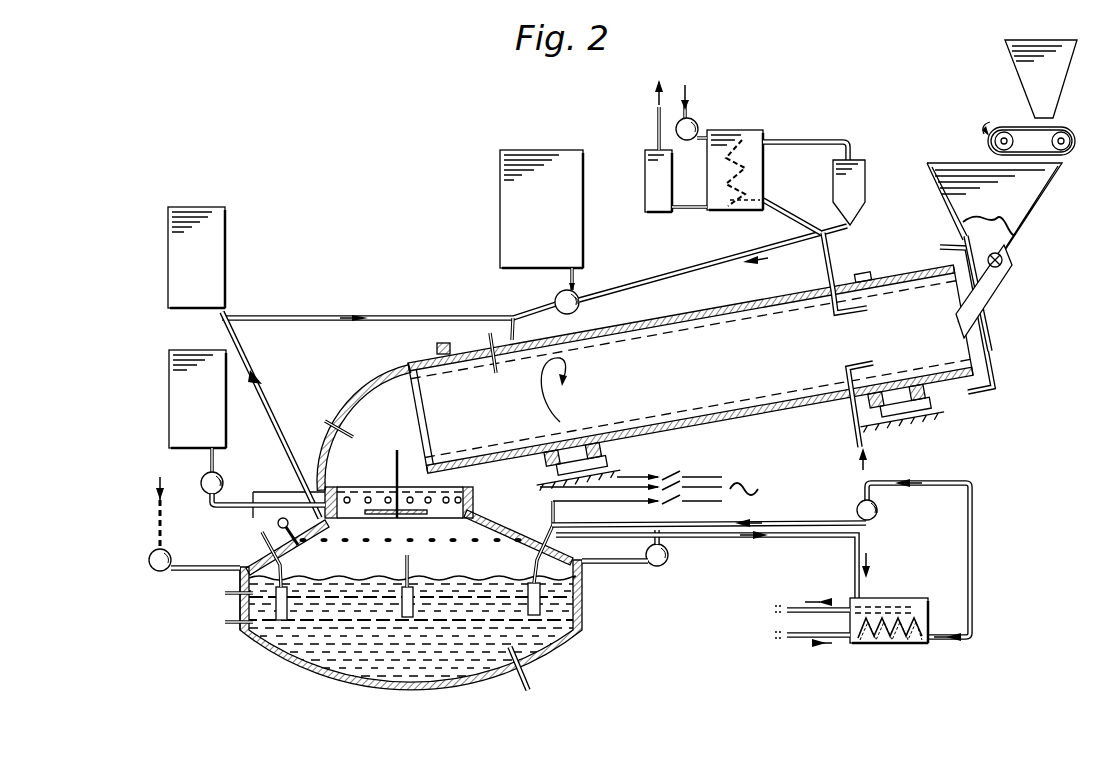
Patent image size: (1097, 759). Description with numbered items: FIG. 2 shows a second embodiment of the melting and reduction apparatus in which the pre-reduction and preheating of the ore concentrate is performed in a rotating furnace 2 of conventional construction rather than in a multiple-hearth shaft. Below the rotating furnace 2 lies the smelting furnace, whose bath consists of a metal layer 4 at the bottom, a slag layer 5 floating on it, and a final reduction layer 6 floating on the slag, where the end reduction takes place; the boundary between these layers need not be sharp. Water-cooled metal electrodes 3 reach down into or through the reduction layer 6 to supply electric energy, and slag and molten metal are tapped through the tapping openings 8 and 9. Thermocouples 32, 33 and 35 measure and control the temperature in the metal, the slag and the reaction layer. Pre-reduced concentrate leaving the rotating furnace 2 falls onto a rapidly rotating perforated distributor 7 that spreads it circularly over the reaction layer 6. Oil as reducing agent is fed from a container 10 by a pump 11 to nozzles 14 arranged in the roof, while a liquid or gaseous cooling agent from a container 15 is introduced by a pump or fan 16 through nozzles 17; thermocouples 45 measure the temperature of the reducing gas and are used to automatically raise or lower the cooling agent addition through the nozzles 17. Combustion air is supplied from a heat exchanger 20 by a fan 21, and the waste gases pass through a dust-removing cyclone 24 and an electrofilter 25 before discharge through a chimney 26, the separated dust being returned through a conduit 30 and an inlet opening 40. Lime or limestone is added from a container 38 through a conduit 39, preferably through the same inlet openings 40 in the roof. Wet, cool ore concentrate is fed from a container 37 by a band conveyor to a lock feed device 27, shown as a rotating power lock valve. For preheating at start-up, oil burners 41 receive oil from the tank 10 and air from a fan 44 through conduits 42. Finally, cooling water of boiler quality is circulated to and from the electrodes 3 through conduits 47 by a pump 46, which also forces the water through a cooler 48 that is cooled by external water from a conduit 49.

The rotating furnace 2 is at (808, 414).
The electrodes 3 is at (528, 588).
The metal layer 4 is at (411, 648).
The slag layer 5 is at (411, 609).
The final reduction layer 6 is at (412, 588).
The rotating perforated distributor 7 is at (400, 520).
The tapping opening 8 is at (577, 616).
The tapping opening 9 is at (244, 642).
The container 10 is at (527, 222).
The pump 11 is at (582, 302).
The nozzles 14 is at (292, 528).
The container 15 is at (187, 410).
The pump (fan) 16 is at (204, 480).
The nozzles 17 is at (338, 492).
The heat exchanger 20 is at (716, 210).
The fan 21 is at (697, 122).
The dust-removing cyclon 24 is at (840, 203).
The electrofilter 25 is at (649, 196).
The chimney 26 is at (656, 128).
The lock feed device 27 is at (998, 268).
The conduit 30 is at (657, 272).
The thermocouple 32 is at (530, 683).
The thermocouple 33 is at (227, 623).
The thermocouple 35 is at (227, 595).
The container 37 is at (1024, 93).
The supply container 38 is at (180, 275).
The conduit 39 is at (302, 320).
The inlet opening 40 is at (333, 518).
The oil burners 41 is at (240, 562).
The conduits 42 is at (236, 571).
The fan 44 is at (669, 556).
The thermocouples 45 is at (490, 333).
The pump 46 is at (862, 504).
The conduits 47 is at (816, 522).
The cooler 48 is at (898, 643).
The conduit 49 is at (788, 612).